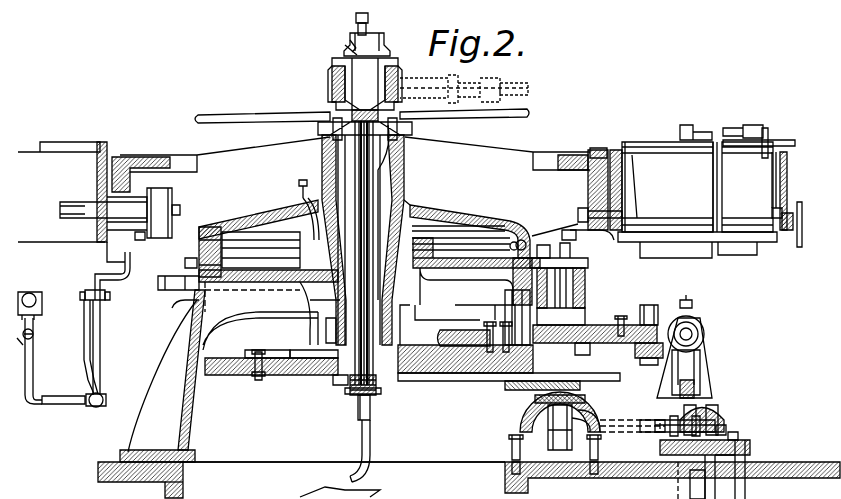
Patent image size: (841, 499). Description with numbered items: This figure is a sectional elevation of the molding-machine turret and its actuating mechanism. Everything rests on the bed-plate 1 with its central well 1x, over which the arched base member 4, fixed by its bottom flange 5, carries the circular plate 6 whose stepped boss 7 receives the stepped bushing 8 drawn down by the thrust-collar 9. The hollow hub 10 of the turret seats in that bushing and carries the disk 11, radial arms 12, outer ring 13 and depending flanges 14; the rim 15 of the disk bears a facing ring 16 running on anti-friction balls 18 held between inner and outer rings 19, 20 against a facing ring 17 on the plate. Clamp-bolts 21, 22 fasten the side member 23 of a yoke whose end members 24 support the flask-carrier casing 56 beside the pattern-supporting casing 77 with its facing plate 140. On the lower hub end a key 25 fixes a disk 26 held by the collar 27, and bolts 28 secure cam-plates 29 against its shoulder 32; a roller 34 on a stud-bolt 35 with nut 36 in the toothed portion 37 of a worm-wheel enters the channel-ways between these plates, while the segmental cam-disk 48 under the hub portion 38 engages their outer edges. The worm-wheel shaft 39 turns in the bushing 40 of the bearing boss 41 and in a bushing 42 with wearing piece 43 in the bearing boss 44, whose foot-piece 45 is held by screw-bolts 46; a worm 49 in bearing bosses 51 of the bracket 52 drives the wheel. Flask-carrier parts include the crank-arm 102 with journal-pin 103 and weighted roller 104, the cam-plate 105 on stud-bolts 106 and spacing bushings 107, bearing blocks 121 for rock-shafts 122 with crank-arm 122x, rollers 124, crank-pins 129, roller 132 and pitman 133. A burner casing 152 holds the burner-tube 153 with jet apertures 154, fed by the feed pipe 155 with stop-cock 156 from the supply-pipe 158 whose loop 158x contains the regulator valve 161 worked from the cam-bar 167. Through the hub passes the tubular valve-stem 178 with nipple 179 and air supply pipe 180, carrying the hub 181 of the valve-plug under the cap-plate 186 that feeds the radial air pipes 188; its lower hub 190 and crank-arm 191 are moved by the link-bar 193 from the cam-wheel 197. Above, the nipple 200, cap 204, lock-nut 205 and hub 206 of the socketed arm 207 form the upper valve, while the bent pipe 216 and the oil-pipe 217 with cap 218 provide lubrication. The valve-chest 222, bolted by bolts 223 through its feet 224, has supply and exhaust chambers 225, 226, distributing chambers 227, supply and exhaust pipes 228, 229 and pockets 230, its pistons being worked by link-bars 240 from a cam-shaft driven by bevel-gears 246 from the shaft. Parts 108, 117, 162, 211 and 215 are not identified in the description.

The bed-plate 1 is at (108, 464).
The well 1x is at (178, 482).
The arched base member 4 is at (188, 390).
The bottom flange 5 is at (138, 450).
The circular plate 6 is at (250, 284).
The central internally stepped boss 7 is at (310, 296).
The externally stepped bushing 8 is at (318, 310).
The threaded thrust-collar 9 is at (325, 328).
The hollow hub 10 is at (398, 170).
The disk 11 is at (268, 220).
The radial ribs or arms 12 is at (462, 150).
The outer ring 13 is at (162, 158).
The depending flanges 14 is at (135, 180).
The depending rim 15 is at (197, 248).
The facing ring 16 is at (512, 225).
The facing ring 17 is at (518, 255).
The anti-friction balls 18 is at (512, 262).
The inner ring 19 is at (512, 270).
The outer ring 20 is at (533, 240).
The clamp-bolt 21 is at (596, 230).
The clamp-bolt 22 is at (598, 148).
The side member of yoke 23 is at (635, 180).
The parallel end members 24 is at (747, 187).
The key 25 is at (408, 378).
The disk 26 is at (304, 376).
The internally threaded collar 27 is at (338, 384).
The bolts 28 is at (258, 376).
The cam-plates 29 is at (256, 350).
The annular shoulder 32 is at (305, 356).
The roller 34 is at (640, 356).
The shouldered stud-bolt 35 is at (650, 316).
The nut 36 is at (634, 320).
The peripherally toothed outer portion 37 is at (466, 330).
The inner or hub portion 38 is at (592, 326).
The vertical shaft 39 is at (535, 345).
The bushing 40 is at (585, 283).
The bearing boss 41 is at (585, 268).
The bushing 42 is at (548, 424).
The wearing piece 43 is at (570, 468).
The bearing boss 44 is at (528, 412).
The foot-piece 45 is at (512, 453).
The screw-bolts 46 is at (512, 438).
The segmental cam-disk 48 is at (594, 348).
The worm 49 is at (700, 318).
The bearing bosses 51 is at (705, 330).
The bracket 52 is at (710, 358).
The flask-carrier casing 56 is at (612, 238).
The pattern-supporting box or casing 77 is at (640, 267).
The lateral crank-arm 102 is at (148, 205).
The headed journal-pin 103 is at (180, 212).
The weighted roller 104 is at (172, 200).
The stationary cam-plate 105 is at (195, 260).
The stud-bolts 106 is at (160, 284).
The spacing bushings 107 is at (192, 286).
The fitting 108 is at (140, 240).
The bolt 117 is at (503, 330).
The bearing blocks 121 is at (757, 125).
The rock-shafts 122 is at (728, 128).
The depending crank-arm 122x is at (790, 134).
The roller 124 is at (788, 180).
The crank-pins 129 is at (770, 212).
The roller 132 is at (797, 236).
The extensible pitman 133 is at (778, 178).
The facing plate 140 is at (698, 258).
The flaring rectangular casing 152 is at (40, 300).
The burner-tube 153 is at (86, 342).
The lateral jet apertures 154 is at (90, 390).
The upright feed pipe 155 is at (88, 290).
The stop-cock 156 is at (36, 332).
The supply-pipe 158 is at (103, 400).
The loop 158x is at (100, 343).
The regulator valve 161 is at (104, 290).
The cap 162 is at (105, 296).
The cam-bar 167 is at (115, 266).
The tubular valve-stem 178 is at (356, 164).
The nipple 179 is at (370, 415).
The compressed air supply pipe 180 is at (370, 440).
The hub of valve-plug 181 is at (380, 122).
The cap-plate 186 is at (322, 130).
The radial air pipe 188 is at (305, 105).
The hub of crank-arm 190 is at (356, 395).
The crank-arm 191 is at (380, 392).
The link-bar 193 is at (342, 430).
The cam-wheel 197 is at (570, 378).
The externally threaded nipple 200 is at (368, 30).
The cap 204 is at (345, 52).
The lock-nut 205 is at (384, 44).
The hollow hub 206 is at (330, 75).
The tubular socketed arm 207 is at (432, 78).
The nut 211 is at (355, 19).
The pin 215 is at (352, 45).
The bent pipe 216 is at (392, 190).
The inclined oil-pipe 217 is at (305, 224).
The cap 218 is at (300, 186).
The hydraulic valve-chest 222 is at (712, 408).
The bolts 223 is at (730, 438).
The feet 224 is at (742, 445).
The supply chamber 225 is at (718, 418).
The exhaust chamber 226 is at (680, 412).
The distributing chambers 227 is at (742, 455).
The supply pipe 228 is at (745, 487).
The exhaust pipe 229 is at (678, 485).
The pocket 230 is at (745, 470).
The link-bar 240 is at (622, 428).
The bevel-gears 246 is at (588, 408).